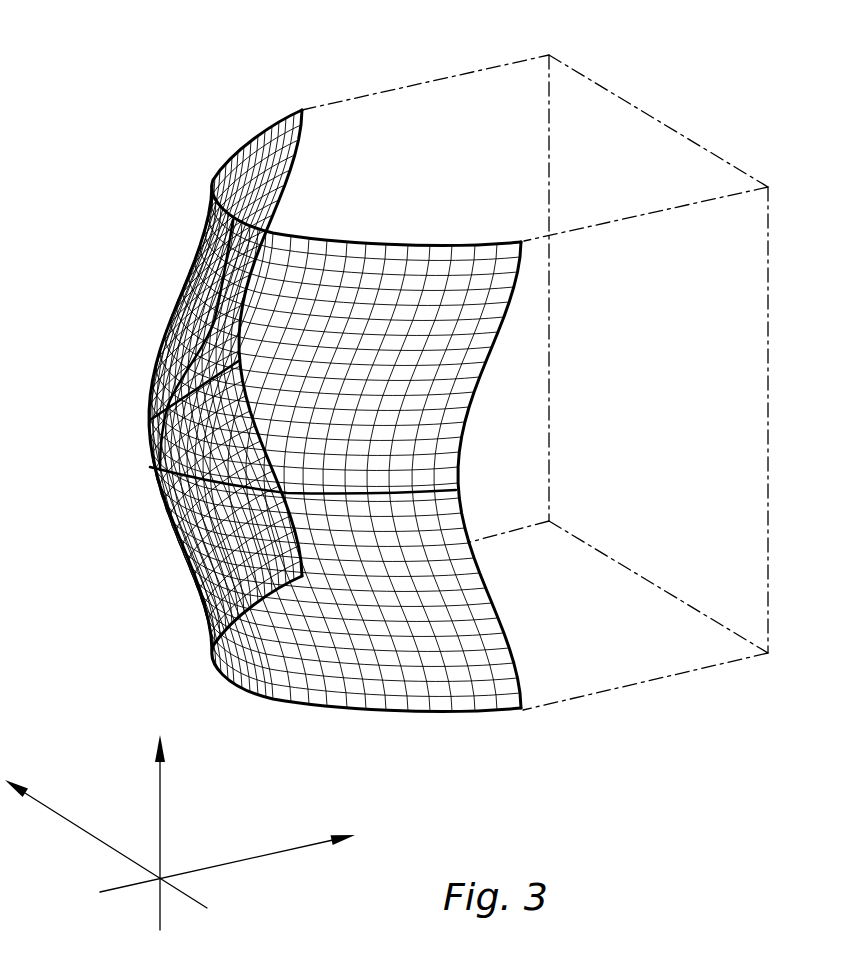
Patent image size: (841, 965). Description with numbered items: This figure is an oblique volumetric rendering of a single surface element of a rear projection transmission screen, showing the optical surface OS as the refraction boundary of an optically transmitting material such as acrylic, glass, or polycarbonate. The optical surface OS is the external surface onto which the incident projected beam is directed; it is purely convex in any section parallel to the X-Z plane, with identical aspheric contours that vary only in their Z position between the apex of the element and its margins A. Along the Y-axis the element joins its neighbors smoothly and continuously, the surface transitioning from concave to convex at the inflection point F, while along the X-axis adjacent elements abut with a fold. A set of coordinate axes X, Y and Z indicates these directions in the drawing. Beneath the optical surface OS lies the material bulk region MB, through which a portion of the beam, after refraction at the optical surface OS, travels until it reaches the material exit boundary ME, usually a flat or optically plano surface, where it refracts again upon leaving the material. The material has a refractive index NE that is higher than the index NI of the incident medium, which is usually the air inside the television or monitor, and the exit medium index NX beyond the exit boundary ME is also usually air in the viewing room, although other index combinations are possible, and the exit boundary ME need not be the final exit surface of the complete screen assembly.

The optical surface OS is at (363, 670).
The incident medium index NI is at (281, 418).
The margins of the element A is at (302, 110).
The inflection point F is at (467, 413).
The material bulk region MB is at (445, 124).
The material exit boundary ME is at (642, 142).
The exit medium index NX is at (796, 420).
The refractive index of the element material NE is at (656, 658).
The X-axis X is at (227, 882).
The Y-axis Y is at (159, 850).
The Z-axis Z is at (106, 845).